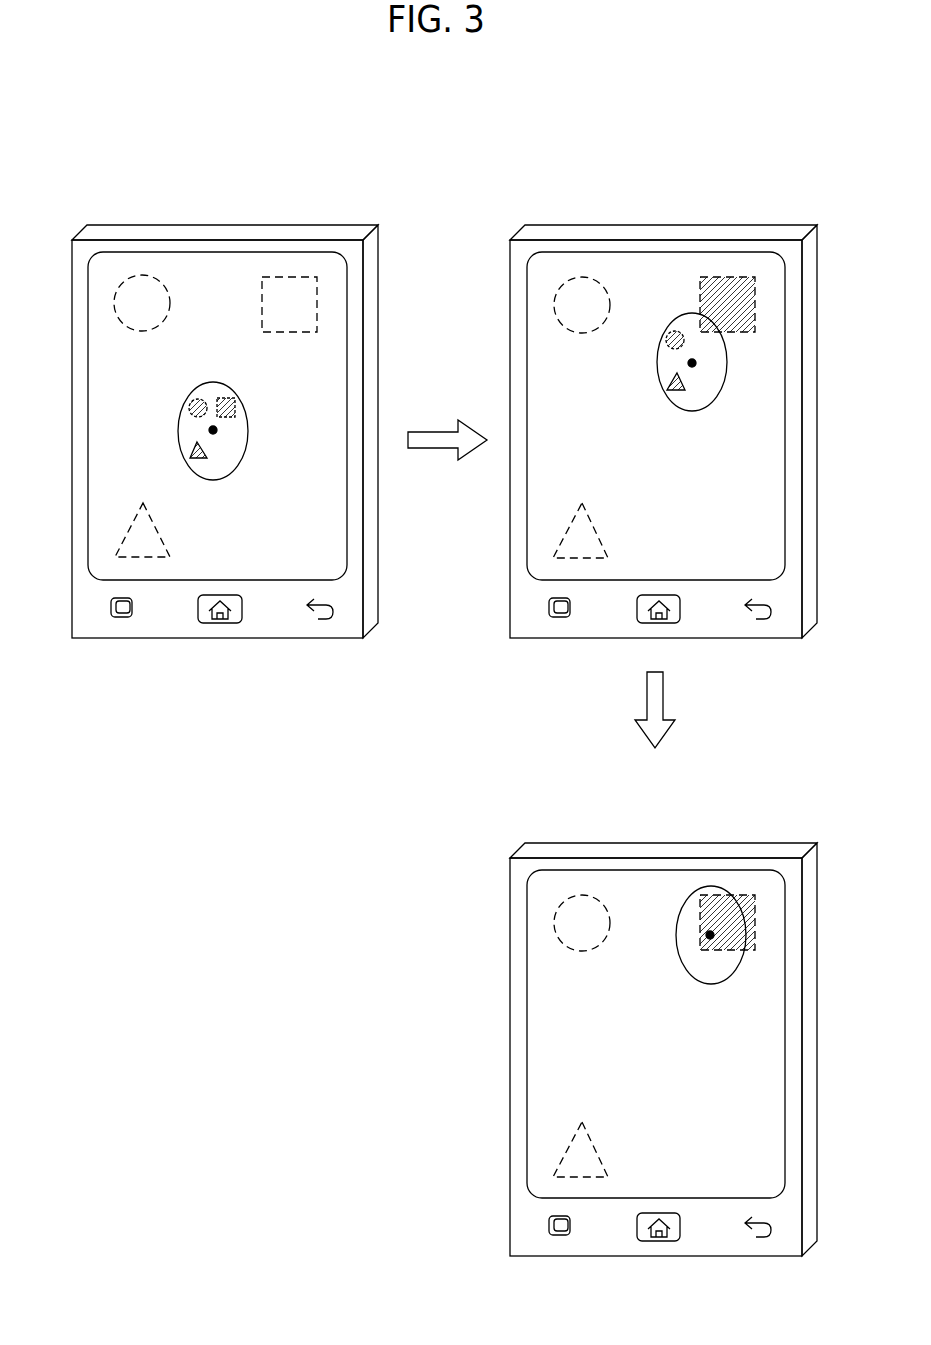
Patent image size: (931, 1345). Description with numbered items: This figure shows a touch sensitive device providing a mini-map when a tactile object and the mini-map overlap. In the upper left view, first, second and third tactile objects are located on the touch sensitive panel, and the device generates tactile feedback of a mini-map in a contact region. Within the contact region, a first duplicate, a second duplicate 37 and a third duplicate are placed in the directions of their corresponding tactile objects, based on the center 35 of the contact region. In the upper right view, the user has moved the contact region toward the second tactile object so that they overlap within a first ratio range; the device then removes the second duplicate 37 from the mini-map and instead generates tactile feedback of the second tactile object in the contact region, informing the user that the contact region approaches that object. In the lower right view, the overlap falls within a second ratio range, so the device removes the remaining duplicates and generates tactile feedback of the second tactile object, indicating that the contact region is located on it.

The center of the contact region 35 is at (217, 432).
The second duplicate 37 is at (237, 402).